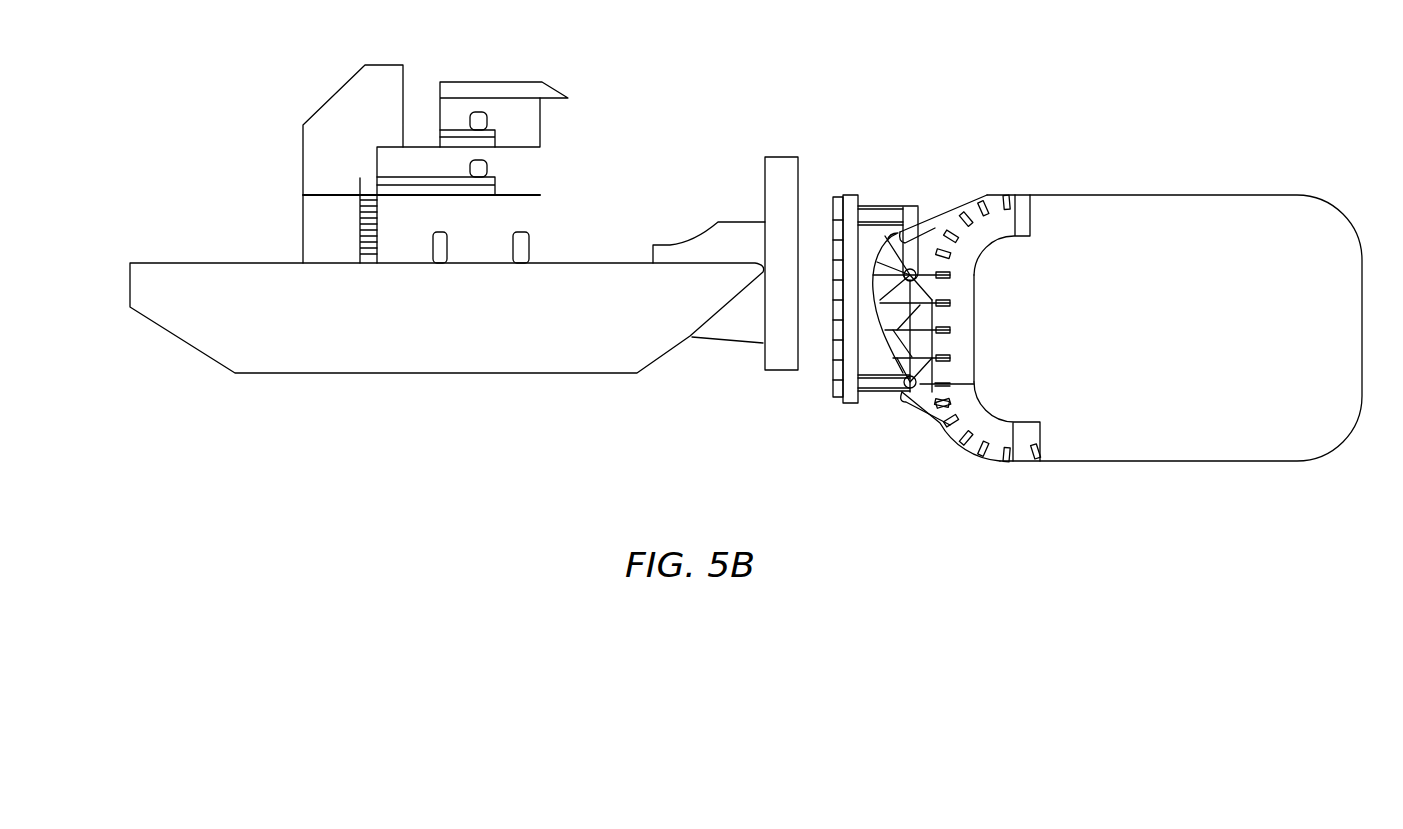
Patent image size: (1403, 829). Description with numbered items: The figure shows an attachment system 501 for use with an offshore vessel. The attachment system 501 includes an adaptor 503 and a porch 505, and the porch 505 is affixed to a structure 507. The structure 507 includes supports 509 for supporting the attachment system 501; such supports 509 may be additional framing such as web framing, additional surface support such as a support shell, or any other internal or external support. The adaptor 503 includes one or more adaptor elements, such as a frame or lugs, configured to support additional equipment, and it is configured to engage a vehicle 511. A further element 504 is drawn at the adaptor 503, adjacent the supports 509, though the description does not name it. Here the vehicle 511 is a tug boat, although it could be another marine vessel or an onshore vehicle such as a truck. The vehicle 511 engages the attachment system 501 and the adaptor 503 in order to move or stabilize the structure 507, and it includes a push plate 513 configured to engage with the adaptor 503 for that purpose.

The attachment system 501 is at (913, 282).
The adaptor 503 is at (843, 393).
The pivot post 504 is at (910, 207).
The porch 505 is at (920, 403).
The structure 507 is at (1158, 356).
The supports 509 is at (973, 193).
The vehicle 511 is at (437, 329).
The push plate 513 is at (780, 165).